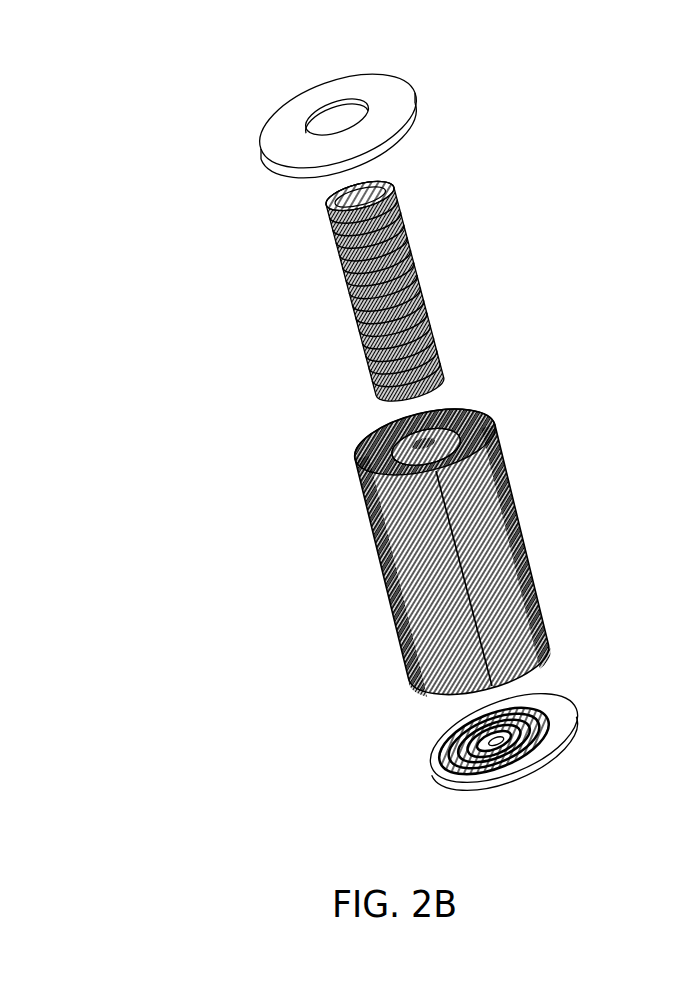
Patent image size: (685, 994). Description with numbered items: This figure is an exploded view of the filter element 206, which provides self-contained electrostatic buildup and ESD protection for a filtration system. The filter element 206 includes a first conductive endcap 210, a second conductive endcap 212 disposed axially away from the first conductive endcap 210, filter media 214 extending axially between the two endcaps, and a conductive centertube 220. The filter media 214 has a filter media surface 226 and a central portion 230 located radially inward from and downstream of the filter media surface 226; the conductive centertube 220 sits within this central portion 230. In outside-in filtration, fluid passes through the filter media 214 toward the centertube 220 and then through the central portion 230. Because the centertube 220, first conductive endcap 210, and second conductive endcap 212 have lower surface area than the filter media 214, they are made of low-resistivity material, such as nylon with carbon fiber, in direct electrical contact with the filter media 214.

The filter element 206 is at (159, 118).
The first conductive endcap 210 is at (264, 164).
The conductive centertube 220 is at (330, 330).
The filter media 214 is at (360, 583).
The central portion 230 is at (436, 431).
The filter media surface 226 is at (524, 516).
The second conductive endcap 212 is at (404, 746).